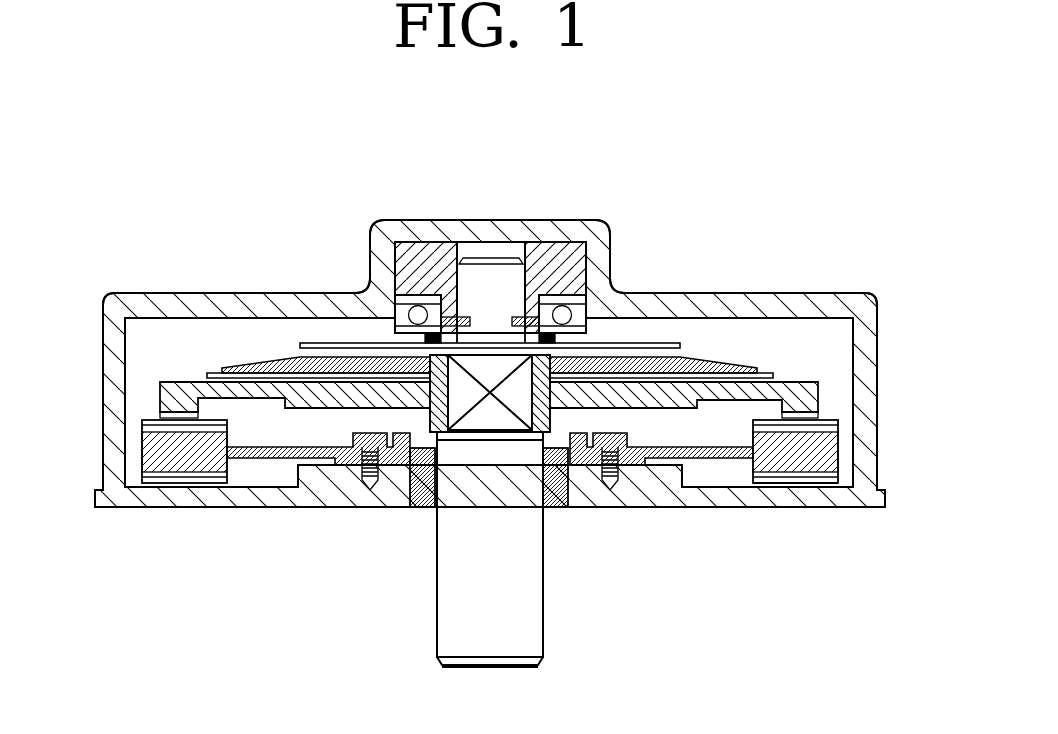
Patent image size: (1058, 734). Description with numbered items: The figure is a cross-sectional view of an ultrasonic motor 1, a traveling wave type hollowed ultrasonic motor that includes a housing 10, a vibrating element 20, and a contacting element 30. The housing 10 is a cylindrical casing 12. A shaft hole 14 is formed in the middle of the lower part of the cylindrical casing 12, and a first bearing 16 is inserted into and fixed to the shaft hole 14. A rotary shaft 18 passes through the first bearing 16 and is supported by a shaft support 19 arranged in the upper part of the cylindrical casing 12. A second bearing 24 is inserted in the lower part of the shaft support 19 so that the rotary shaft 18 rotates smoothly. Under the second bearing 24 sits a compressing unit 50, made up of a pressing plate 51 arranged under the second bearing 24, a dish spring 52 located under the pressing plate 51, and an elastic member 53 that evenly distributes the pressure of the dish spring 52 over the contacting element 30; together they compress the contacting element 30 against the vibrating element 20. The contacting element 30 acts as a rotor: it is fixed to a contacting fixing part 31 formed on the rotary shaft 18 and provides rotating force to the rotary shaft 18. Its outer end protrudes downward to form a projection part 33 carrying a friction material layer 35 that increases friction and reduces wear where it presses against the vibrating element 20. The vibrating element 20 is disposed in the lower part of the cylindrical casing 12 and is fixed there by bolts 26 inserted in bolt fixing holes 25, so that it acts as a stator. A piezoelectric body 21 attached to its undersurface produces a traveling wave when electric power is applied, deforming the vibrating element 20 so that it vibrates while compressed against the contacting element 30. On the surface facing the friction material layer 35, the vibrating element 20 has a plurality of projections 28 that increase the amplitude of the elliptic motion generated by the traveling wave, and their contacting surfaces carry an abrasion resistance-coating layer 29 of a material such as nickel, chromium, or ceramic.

The ultrasonic motor 1 is at (238, 158).
The housing 10 is at (260, 288).
The cylindrical casing 12 is at (115, 298).
The shaft hole 14 is at (573, 492).
The first bearing 16 is at (557, 507).
The rotary shaft 18 is at (442, 617).
The shaft support 19 is at (555, 248).
The vibrating element 20 is at (533, 487).
The piezoelectric body 21 is at (830, 478).
The second bearing 24 is at (610, 277).
The bolt fixing holes 25 is at (357, 485).
The bolts 26 is at (350, 475).
The projections 28 is at (802, 433).
The abrasion resistance-coating layer 29 is at (787, 423).
The contacting element 30 is at (563, 386).
The contacting fixing part 31 is at (475, 423).
The projection part 33 is at (817, 393).
The friction material layer 35 is at (817, 418).
The compressing unit 50 is at (516, 285).
The pressing plate 51 is at (660, 343).
The dish spring 52 is at (718, 366).
The elastic member 53 is at (773, 378).